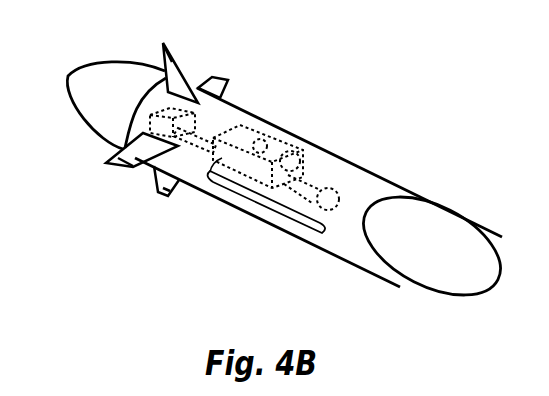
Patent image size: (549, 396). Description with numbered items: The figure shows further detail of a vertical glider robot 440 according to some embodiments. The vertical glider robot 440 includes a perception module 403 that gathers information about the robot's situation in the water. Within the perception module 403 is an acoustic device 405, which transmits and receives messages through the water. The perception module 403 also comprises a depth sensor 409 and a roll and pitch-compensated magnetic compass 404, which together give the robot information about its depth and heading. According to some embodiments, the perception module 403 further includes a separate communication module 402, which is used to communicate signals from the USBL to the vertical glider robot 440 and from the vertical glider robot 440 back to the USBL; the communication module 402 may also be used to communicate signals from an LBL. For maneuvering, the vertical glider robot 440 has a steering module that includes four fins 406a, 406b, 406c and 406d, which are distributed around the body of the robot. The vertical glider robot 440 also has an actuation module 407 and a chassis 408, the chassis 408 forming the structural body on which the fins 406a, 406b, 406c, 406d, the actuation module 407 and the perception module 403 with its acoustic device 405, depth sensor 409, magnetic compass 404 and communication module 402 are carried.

The vertical glider robot 440 is at (160, 316).
The communication module 402 is at (328, 202).
The perception module 403 is at (260, 206).
The roll and pitch-compensated magnetic compass 404 is at (287, 163).
The acoustic device 405 is at (222, 158).
The fin 406a is at (213, 88).
The fin 406b is at (170, 58).
The fin 406c is at (120, 160).
The fin 406d is at (160, 193).
The actuation module 407 is at (168, 112).
The chassis 408 is at (200, 130).
The depth sensor 409 is at (263, 147).